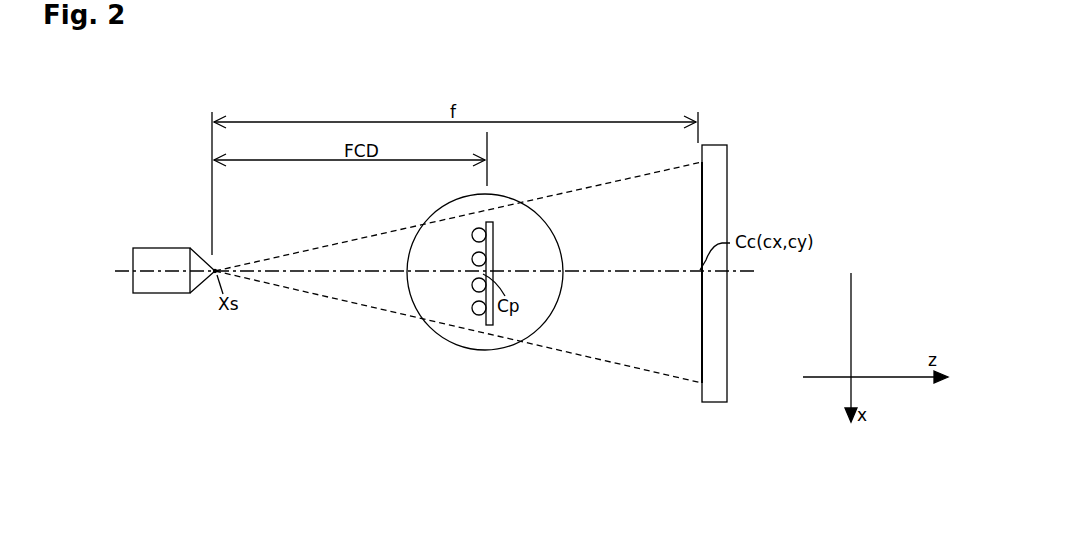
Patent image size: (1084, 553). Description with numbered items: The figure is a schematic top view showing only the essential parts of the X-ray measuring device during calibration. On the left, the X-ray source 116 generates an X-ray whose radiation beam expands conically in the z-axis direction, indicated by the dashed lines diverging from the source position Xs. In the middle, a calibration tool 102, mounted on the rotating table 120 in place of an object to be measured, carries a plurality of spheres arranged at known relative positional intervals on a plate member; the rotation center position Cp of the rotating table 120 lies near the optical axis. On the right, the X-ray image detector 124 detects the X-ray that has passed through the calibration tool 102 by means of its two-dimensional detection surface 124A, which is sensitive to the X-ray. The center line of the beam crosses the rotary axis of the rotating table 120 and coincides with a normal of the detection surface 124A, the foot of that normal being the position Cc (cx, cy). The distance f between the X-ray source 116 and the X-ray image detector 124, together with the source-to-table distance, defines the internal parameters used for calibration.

The X-ray source 116 is at (166, 250).
The rotating table 120 is at (462, 342).
The calibration tool 102 is at (492, 228).
The X-ray image detector 124 is at (707, 392).
The detection surface 124A is at (702, 189).